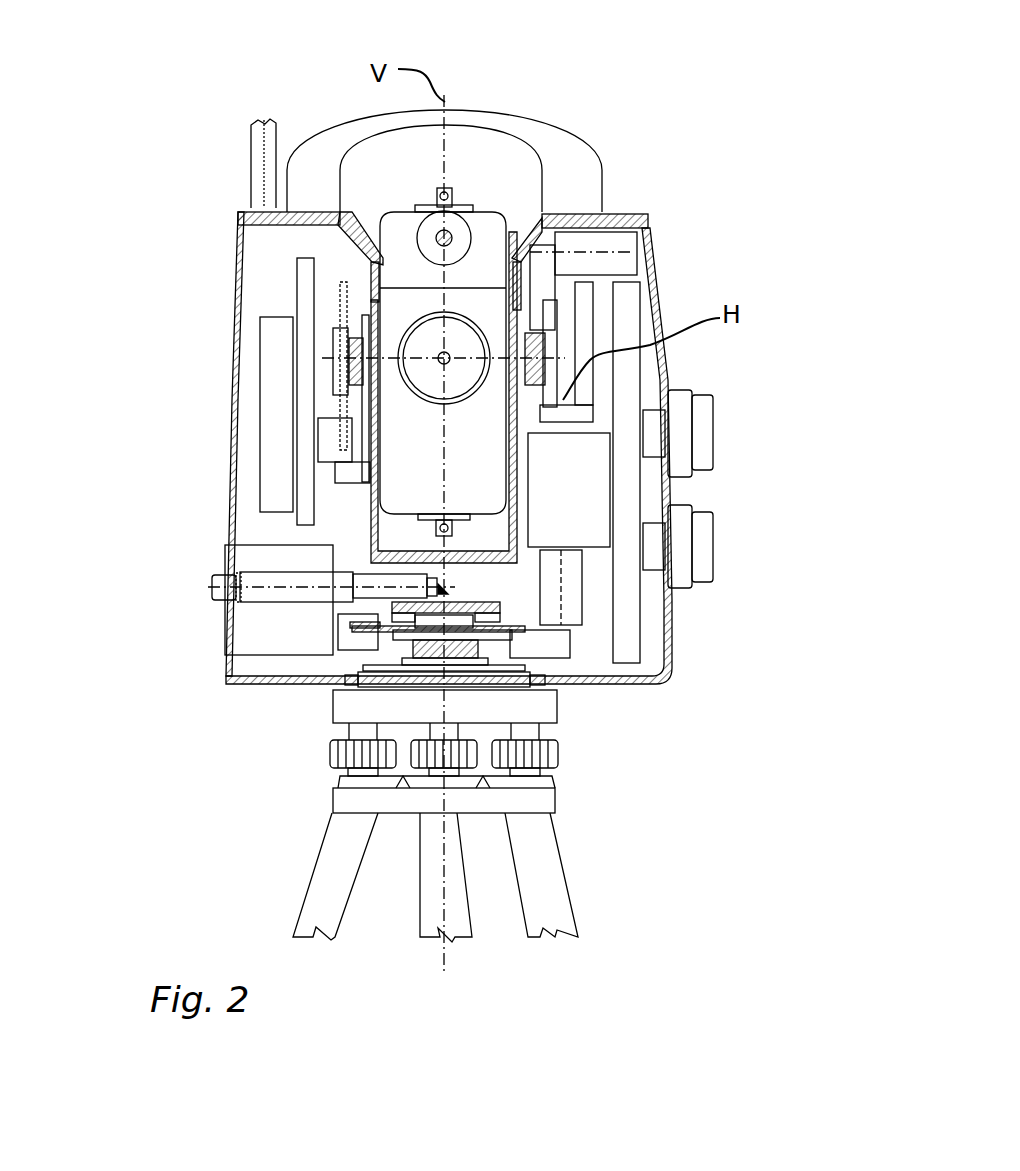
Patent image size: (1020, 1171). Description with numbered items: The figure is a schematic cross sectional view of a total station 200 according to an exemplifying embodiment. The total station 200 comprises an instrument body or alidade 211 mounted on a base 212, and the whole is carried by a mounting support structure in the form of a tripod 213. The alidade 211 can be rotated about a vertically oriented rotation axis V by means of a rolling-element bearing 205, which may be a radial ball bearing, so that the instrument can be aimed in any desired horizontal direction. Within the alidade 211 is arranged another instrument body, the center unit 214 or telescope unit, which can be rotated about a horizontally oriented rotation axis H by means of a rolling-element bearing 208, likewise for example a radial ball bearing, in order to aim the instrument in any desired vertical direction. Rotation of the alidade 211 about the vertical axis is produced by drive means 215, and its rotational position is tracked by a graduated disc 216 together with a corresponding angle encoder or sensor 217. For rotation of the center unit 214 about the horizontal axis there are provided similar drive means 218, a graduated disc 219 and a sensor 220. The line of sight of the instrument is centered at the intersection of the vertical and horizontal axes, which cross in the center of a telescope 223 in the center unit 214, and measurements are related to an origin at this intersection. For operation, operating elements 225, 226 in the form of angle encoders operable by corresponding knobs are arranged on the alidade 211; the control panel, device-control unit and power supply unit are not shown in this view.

The total station 200 is at (640, 108).
The rolling-element bearing 205 is at (421, 650).
The rolling-element bearing 208 is at (560, 358).
The alidade 211 is at (664, 694).
The base 212 is at (542, 708).
The tripod 213 is at (545, 858).
The center unit 214 is at (480, 243).
The drive means 215 is at (575, 612).
The graduated disc 216 is at (392, 636).
The sensor 217 is at (348, 638).
The drive means 218 is at (624, 243).
The graduated disc 219 is at (340, 412).
The sensor 220 is at (327, 450).
The telescope 223 is at (420, 348).
The operating element 225 is at (702, 420).
The operating element 226 is at (702, 540).